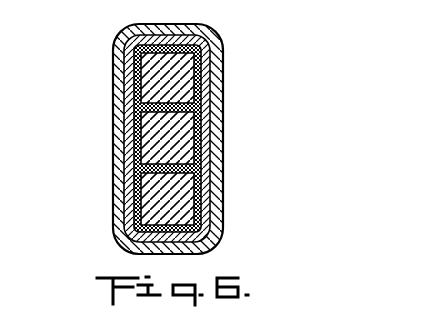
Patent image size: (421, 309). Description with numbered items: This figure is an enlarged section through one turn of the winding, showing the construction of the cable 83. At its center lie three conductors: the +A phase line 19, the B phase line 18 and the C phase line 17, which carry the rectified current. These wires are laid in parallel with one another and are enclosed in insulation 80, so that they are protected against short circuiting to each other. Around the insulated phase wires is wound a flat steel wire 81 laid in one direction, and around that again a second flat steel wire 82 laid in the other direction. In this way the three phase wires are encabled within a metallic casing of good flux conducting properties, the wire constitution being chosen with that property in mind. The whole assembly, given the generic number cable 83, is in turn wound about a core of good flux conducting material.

The insulation 80 is at (205, 47).
The flat steel wire 81 is at (125, 143).
The flat steel wire 82 is at (125, 186).
The cable 83 is at (112, 76).
The +A phase line 19 is at (175, 82).
The B phase line 18 is at (180, 143).
The C phase line 17 is at (183, 206).